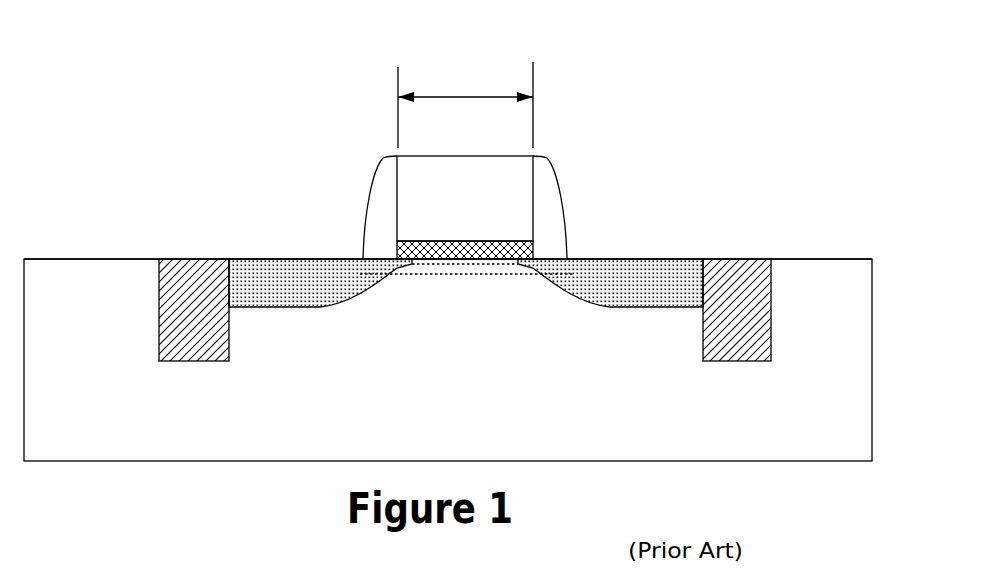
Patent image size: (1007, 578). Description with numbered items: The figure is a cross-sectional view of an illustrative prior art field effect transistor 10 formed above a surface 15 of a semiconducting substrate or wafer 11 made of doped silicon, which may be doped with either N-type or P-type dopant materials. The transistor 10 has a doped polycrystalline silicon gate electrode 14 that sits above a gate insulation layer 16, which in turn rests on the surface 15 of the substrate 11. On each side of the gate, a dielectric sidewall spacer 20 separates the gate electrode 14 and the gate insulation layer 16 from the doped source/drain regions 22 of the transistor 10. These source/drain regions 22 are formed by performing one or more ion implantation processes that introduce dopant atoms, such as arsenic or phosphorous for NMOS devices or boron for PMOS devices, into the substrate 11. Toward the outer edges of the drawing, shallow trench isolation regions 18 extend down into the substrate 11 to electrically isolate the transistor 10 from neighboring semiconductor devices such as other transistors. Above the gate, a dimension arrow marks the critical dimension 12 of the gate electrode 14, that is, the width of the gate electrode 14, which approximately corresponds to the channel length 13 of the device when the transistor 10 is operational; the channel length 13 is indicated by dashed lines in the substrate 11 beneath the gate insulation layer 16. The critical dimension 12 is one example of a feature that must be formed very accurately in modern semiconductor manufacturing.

The field effect transistor 10 is at (358, 122).
The semiconducting substrate 11 is at (770, 433).
The critical dimension 12 is at (467, 97).
The channel length 13 is at (465, 274).
The gate electrode 14 is at (500, 189).
The surface 15 is at (832, 256).
The gate insulation layer 16 is at (533, 241).
The shallow trench isolation regions 18 is at (203, 293).
The dielectric sidewall spacer 20 is at (378, 205).
The source/drain regions 22 is at (303, 273).